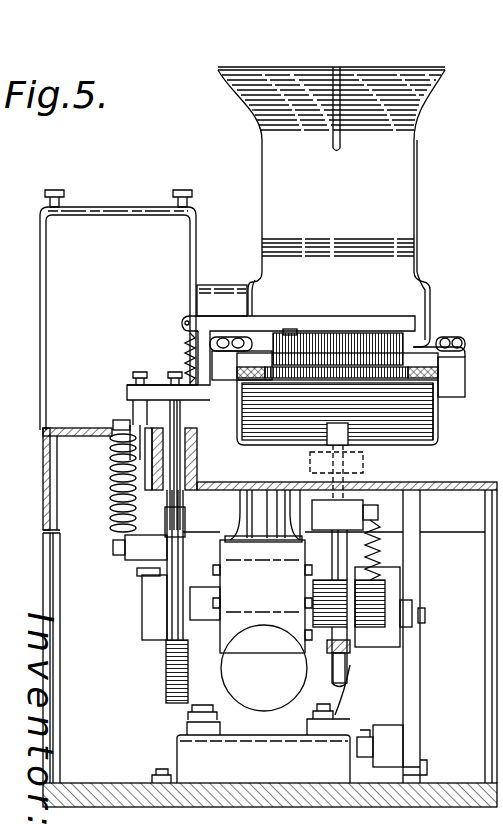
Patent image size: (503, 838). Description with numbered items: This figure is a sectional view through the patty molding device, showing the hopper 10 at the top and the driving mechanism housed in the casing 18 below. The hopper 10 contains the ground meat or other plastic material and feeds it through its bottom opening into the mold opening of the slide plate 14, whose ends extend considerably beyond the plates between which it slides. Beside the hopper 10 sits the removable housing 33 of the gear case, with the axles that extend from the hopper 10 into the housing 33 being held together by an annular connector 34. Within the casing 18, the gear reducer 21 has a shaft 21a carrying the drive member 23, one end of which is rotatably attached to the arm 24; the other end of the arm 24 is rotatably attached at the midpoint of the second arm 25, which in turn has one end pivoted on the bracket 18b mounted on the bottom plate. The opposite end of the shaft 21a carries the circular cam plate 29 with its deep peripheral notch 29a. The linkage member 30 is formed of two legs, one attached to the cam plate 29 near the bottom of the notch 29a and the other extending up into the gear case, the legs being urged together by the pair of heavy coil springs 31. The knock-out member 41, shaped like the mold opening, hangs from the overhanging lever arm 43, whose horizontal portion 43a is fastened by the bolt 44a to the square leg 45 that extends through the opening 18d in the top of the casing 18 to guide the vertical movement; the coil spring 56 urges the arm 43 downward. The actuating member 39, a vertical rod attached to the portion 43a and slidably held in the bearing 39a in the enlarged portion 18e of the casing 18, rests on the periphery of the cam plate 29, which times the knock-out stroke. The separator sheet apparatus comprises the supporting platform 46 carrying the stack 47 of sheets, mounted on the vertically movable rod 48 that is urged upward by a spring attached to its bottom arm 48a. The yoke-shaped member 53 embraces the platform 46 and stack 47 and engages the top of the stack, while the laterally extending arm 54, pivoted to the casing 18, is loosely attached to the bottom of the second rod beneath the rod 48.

The hopper 10 is at (278, 126).
The slide plate 14 is at (502, 189).
The casing 18 is at (43, 450).
The bracket 18b is at (388, 746).
The opening 18d is at (112, 455).
The enlarged portion 18e is at (152, 480).
The gear reducer 21 is at (253, 602).
The shaft 21a is at (200, 587).
The drive member 23 is at (368, 645).
The arm 24 is at (386, 604).
The second arm 25 is at (412, 567).
The cam plate 29 is at (166, 682).
The notch 29a is at (181, 528).
The linkage member 30 is at (114, 538).
The coil springs 31 is at (115, 510).
The housing 33 is at (108, 214).
The annular connector 34 is at (217, 295).
The actuating member 39 is at (179, 448).
The bearing 39a is at (198, 473).
The knock-out member 41 is at (418, 330).
The lever arm 43 is at (295, 322).
The horizontal portion 43a is at (160, 378).
The bolt 44a is at (135, 378).
The leg 45 is at (137, 411).
The supporting platform 46 is at (304, 425).
The stack 47 is at (407, 400).
The rod 48 is at (350, 433).
The arm 48a is at (404, 656).
The yoke-shaped member 53 is at (406, 441).
The arm 54 is at (350, 668).
The coil spring 56 is at (185, 333).